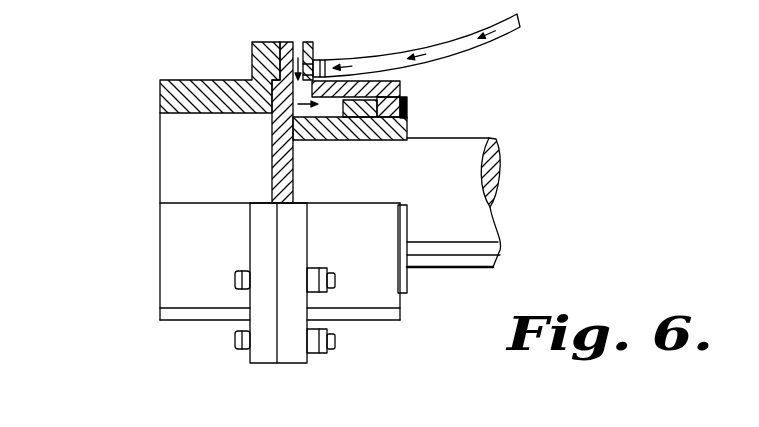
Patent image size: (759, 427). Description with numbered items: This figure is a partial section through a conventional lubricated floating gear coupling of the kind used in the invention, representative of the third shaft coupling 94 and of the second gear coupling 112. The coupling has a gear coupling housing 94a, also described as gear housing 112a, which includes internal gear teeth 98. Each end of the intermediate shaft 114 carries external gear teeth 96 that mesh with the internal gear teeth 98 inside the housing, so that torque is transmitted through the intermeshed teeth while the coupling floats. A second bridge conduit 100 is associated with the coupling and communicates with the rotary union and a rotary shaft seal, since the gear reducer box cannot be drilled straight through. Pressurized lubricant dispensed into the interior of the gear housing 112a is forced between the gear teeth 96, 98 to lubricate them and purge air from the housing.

The third shaft coupling 94 is at (226, 181).
The second gear coupling 112 is at (208, 79).
The gear coupling housing 94a is at (470, 86).
The gear housing 112a is at (470, 86).
The external gear teeth 96 is at (403, 97).
The internal gear teeth 98 is at (338, 106).
The second bridge conduit 100 is at (663, 4).
The intermediate shaft 114 is at (500, 153).